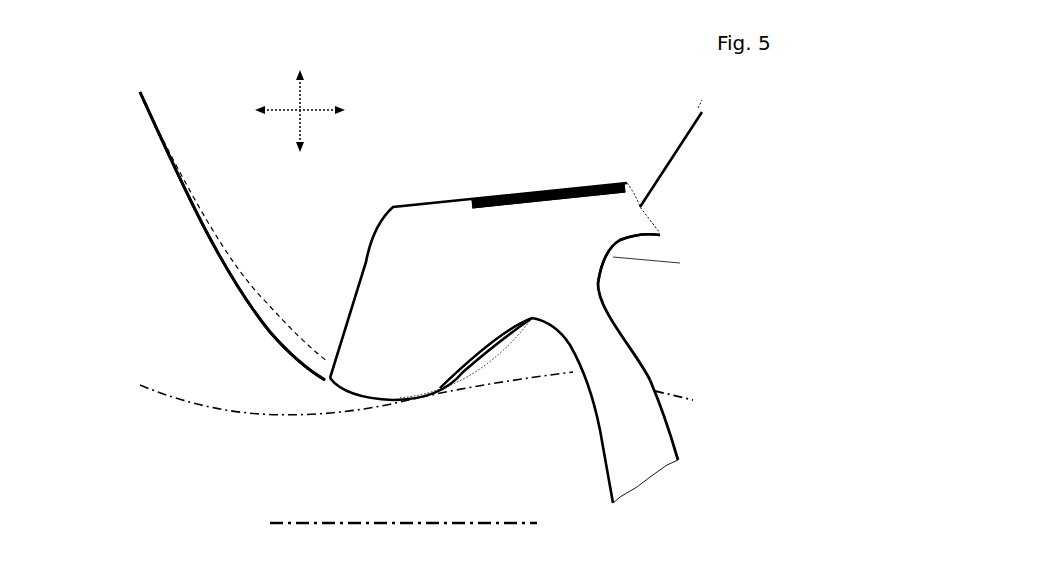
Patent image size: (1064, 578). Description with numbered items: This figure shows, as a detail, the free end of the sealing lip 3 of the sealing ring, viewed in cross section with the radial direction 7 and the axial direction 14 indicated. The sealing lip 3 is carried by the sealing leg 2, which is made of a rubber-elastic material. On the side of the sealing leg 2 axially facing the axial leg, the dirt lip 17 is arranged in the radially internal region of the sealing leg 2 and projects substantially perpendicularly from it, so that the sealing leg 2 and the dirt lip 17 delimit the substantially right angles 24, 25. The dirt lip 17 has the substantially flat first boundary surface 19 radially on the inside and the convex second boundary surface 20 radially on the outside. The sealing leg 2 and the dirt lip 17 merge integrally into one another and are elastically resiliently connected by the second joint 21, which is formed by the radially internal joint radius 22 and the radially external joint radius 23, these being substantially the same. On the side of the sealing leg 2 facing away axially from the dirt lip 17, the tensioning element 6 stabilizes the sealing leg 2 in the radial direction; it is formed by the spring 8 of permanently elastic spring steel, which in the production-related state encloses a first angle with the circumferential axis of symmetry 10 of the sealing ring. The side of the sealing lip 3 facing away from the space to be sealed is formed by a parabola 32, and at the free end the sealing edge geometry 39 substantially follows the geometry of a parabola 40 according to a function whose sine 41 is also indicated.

The sealing leg 2 is at (617, 216).
The sealing lip 3 is at (387, 348).
The tensioning element 6 is at (550, 183).
The radial direction 7 is at (294, 111).
The spring 8 is at (550, 183).
The circumferential axis of symmetry 10 is at (333, 523).
The axial direction 14 is at (300, 120).
The dirt lip 17 is at (633, 422).
The first boundary surface 19 is at (588, 388).
The second boundary surface 20 is at (645, 362).
The second joint 21 is at (606, 341).
The radially internal joint radius 22 is at (532, 318).
The radially external joint radius 23 is at (605, 258).
The right angle 24 is at (532, 318).
The right angle 25 is at (605, 258).
The parabola 32 is at (270, 332).
The sealing edge geometry 39 is at (270, 332).
The parabola 40 is at (267, 303).
The sine 41 is at (250, 413).